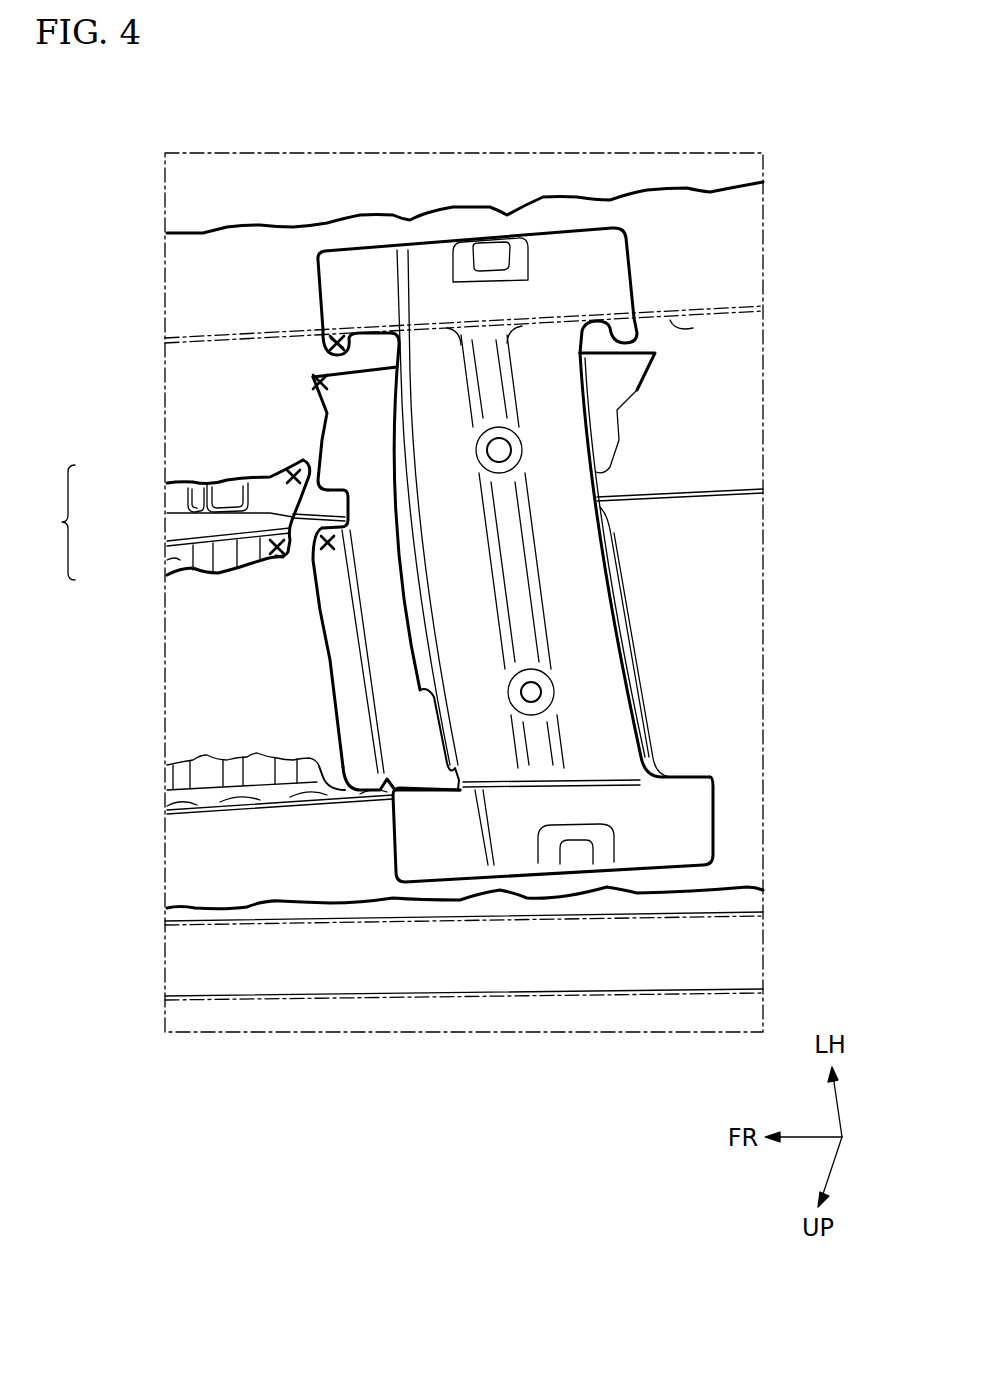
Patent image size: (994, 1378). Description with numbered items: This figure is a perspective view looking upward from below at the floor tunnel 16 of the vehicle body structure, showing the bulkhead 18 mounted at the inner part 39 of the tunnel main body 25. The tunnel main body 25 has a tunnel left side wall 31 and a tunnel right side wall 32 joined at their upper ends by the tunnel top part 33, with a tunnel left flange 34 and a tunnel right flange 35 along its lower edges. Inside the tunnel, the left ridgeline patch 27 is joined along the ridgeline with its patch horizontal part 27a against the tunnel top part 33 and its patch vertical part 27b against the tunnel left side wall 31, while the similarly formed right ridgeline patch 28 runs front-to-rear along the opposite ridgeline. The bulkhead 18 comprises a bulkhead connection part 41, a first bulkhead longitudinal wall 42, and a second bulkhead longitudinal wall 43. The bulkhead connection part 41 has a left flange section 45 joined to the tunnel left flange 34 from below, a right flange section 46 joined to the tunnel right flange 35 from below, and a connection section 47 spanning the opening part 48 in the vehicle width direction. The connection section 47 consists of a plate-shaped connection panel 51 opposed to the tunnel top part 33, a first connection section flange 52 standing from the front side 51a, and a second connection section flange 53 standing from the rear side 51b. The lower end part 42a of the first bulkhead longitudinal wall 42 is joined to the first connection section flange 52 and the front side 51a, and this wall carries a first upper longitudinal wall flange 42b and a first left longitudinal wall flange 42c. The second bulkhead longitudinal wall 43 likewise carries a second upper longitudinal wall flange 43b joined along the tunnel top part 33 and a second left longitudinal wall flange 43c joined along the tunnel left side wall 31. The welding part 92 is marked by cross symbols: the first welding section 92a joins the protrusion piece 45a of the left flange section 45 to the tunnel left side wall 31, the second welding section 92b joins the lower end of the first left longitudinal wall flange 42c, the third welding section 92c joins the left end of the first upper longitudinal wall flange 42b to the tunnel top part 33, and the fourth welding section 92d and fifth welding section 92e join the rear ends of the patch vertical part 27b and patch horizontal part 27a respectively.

The floor tunnel 16 is at (205, 230).
The bulkhead 18 is at (607, 480).
The tunnel main body 25 is at (273, 243).
The left ridgeline patch 27 is at (167, 520).
The patch horizontal part 27a is at (177, 557).
The patch vertical part 27b is at (185, 507).
The right ridgeline patch 28 is at (190, 793).
The tunnel left side wall 31 is at (227, 357).
The tunnel right side wall 32 is at (257, 803).
The tunnel top part 33 is at (192, 695).
The tunnel left flange 34 is at (712, 215).
The tunnel right flange 35 is at (365, 877).
The inner part 39 is at (252, 612).
The bulkhead connection part 41 is at (597, 617).
The first bulkhead longitudinal wall 42 is at (382, 706).
The lower end part 42a is at (398, 555).
The first upper longitudinal wall flange 42b is at (345, 680).
The first left longitudinal wall flange 42c is at (330, 410).
The second bulkhead longitudinal wall 43 is at (647, 383).
The second upper longitudinal wall flange 43b is at (622, 620).
The second left longitudinal wall flange 43c is at (617, 413).
The left flange section 45 is at (558, 257).
The protrusion piece 45a is at (330, 338).
The right flange section 46 is at (663, 842).
The connection section 47 is at (583, 560).
The opening part 48 is at (693, 329).
The connection panel 51 is at (577, 683).
The front side 51a is at (427, 560).
The rear side 51b is at (587, 458).
The first connection section flange 52 is at (425, 694).
The second connection section flange 53 is at (633, 700).
The welding part 92 is at (342, 330).
The first welding section 92a is at (336, 334).
The second welding section 92b is at (318, 380).
The third welding section 92c is at (327, 548).
The fourth welding section 92d is at (296, 472).
The fifth welding section 92e is at (277, 552).